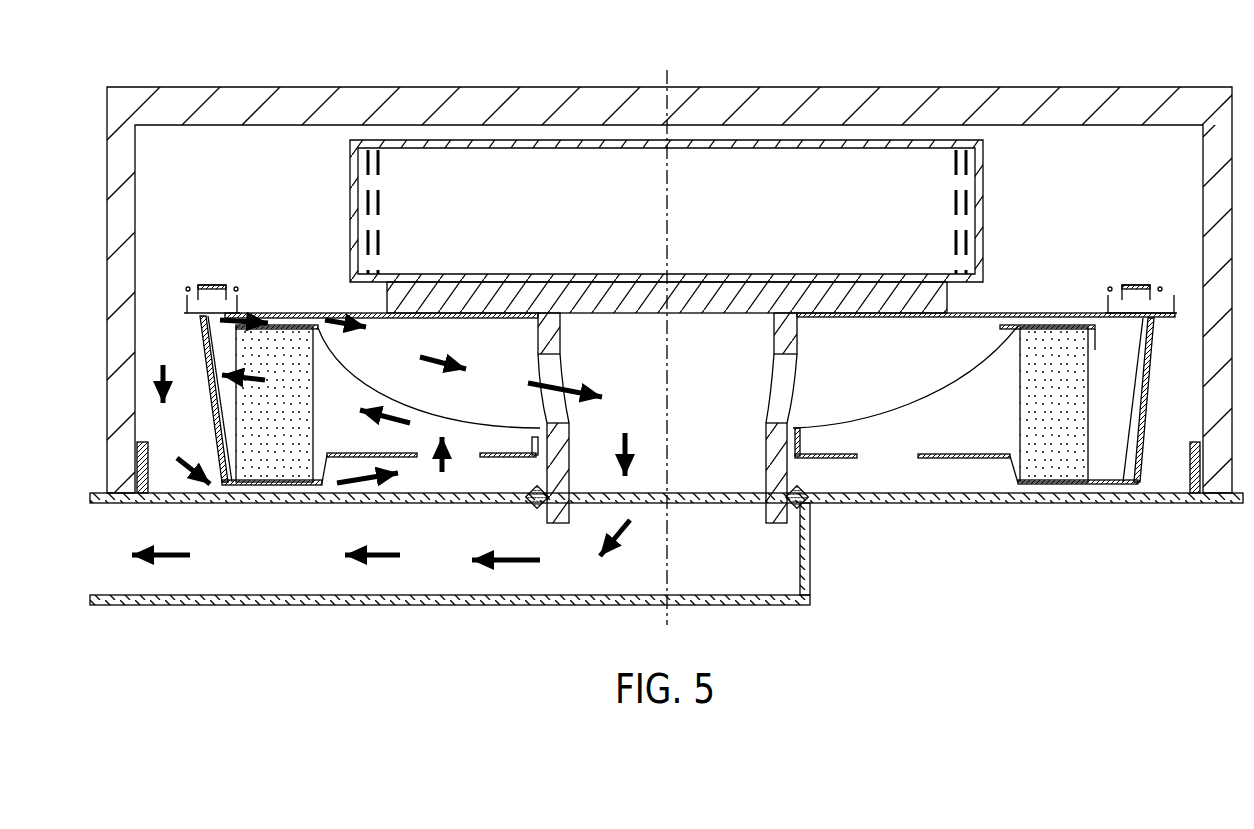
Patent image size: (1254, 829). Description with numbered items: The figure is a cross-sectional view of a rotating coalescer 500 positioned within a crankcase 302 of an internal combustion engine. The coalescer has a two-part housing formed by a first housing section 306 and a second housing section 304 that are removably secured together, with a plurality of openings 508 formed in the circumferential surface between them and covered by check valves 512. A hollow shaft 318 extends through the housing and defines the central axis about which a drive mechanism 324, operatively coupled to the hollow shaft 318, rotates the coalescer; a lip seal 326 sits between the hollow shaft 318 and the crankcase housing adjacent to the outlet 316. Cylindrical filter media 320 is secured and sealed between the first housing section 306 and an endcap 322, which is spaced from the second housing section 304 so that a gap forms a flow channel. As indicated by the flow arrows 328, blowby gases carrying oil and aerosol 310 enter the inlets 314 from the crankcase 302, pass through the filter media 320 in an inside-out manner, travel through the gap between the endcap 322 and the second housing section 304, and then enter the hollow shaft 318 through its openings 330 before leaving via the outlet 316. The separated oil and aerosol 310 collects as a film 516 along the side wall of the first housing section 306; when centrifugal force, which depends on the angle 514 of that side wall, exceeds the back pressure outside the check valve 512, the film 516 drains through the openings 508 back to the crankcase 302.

The rotating coalescer 500 is at (240, 52).
The crankcase 302 is at (208, 178).
The drive mechanism 324 is at (766, 218).
The openings in the hollow shaft 330 is at (778, 386).
The hollow shaft 318 is at (772, 462).
The lip seal 326 is at (806, 510).
The outlet 316 is at (708, 516).
The first housing section 306 is at (341, 394).
The film 516 is at (202, 340).
The check valve 512 is at (205, 283).
The filter media 320 is at (250, 447).
The second housing section 304 is at (305, 322).
The oil and aerosol 310 is at (993, 341).
The angle of the side wall 514 is at (1163, 332).
The openings 508 is at (1138, 384).
The endcap 322 is at (918, 410).
The inlets 314 is at (893, 458).
The flow arrows 328 is at (355, 328).